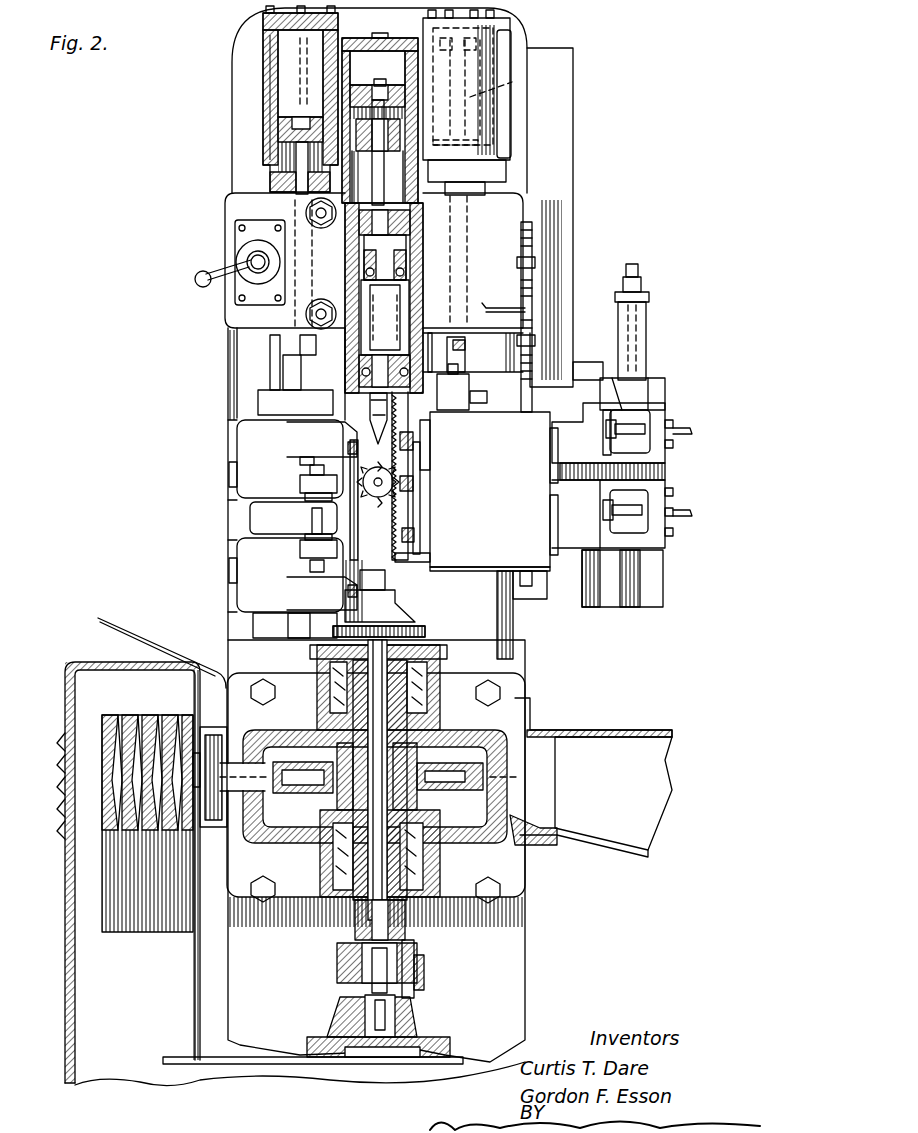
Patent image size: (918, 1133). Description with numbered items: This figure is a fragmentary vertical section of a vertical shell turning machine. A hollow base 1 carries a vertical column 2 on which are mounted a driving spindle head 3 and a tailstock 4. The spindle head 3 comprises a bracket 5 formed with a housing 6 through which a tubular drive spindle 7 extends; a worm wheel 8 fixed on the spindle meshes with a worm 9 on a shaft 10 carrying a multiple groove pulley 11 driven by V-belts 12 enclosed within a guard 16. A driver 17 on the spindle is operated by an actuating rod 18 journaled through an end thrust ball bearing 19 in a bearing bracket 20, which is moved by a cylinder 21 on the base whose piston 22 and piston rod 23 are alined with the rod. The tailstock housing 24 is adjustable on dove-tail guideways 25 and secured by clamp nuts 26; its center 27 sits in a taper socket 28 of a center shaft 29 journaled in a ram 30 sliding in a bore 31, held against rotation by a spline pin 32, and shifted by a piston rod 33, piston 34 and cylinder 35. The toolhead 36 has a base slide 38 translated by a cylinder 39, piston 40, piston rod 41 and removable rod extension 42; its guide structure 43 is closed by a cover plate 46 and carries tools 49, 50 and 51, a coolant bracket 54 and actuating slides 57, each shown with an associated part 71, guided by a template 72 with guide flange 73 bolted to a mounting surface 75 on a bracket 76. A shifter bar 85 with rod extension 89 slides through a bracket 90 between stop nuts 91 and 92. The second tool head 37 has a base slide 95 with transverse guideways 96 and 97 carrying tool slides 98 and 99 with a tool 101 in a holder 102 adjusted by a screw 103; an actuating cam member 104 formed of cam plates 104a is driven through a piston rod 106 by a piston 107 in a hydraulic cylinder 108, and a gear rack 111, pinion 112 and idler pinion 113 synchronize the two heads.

The hollow base 1 is at (253, 1079).
The vertical column 2 is at (530, 41).
The driving spindle head 3 is at (540, 726).
The tailstock 4 is at (222, 221).
The bracket 5 is at (505, 878).
The housing 6 is at (500, 769).
The tubular drive spindle 7 is at (422, 703).
The worm wheel 8 is at (470, 784).
The worm 9 is at (338, 799).
The shaft 10 is at (268, 765).
The multiple groove pulley 11 is at (103, 734).
The V-belts 12 is at (113, 872).
The guard 16 is at (68, 965).
The driver 17 is at (415, 604).
The actuating rod 18 is at (425, 633).
The end thrust ball bearing 19 is at (365, 961).
The bearing bracket 20 is at (420, 969).
The cylinder 21 is at (418, 1019).
The piston 22 is at (358, 1054).
The piston rod 23 is at (360, 933).
The tailstock housing 24 is at (518, 210).
The dove-tail guideways 25 is at (252, 351).
The clamp nuts 26 is at (306, 208).
The center 27 is at (362, 439).
The taper socket 28 is at (421, 333).
The center shaft 29 is at (423, 298).
The cylindrical ram 30 is at (423, 270).
The bore 31 is at (421, 318).
The spline pin 32 is at (425, 207).
The piston rod 33 is at (382, 186).
The piston 34 is at (396, 96).
The cylinder 35 is at (403, 40).
The toolhead 36 is at (477, 573).
The tool head 37 is at (228, 484).
The base slide 38 is at (511, 318).
The cylinder 39 is at (495, 27).
The piston 40 is at (485, 45).
The piston rod 41 is at (512, 82).
The removable rod extension 42 is at (462, 361).
The guide structure 43 is at (540, 516).
The cover plate 46 is at (503, 550).
The tool 49 is at (394, 424).
The tool 50 is at (420, 479).
The tool 51 is at (414, 529).
The bracket 54 is at (420, 459).
The actuating slide 57 is at (557, 439).
The switch 71 is at (606, 425).
The template 72 is at (648, 363).
The guide flange 73 is at (628, 389).
The mounting surface 75 is at (594, 603).
The bracket 76 is at (579, 375).
The shifter bar 85 is at (520, 395).
The rod extension 89 is at (535, 276).
The bracket 90 is at (534, 317).
The stop nut 91 is at (535, 341).
The stop nut 92 is at (535, 256).
The base slide 95 is at (250, 507).
The transverse guideway 96 is at (233, 453).
The transverse guideway 97 is at (233, 564).
The tool slide 98 is at (248, 430).
The tool slide 99 is at (240, 592).
The tool 101 is at (310, 460).
The holder 102 is at (300, 444).
The screw 103 is at (300, 477).
The actuating cam member 104 is at (290, 402).
The cam plates 104a is at (305, 626).
The piston rod 106 is at (300, 345).
The piston 107 is at (283, 110).
The hydraulic cylinder 108 is at (263, 75).
The gear rack 111 is at (425, 555).
The pinion 112 is at (378, 477).
The idler pinion 113 is at (352, 490).